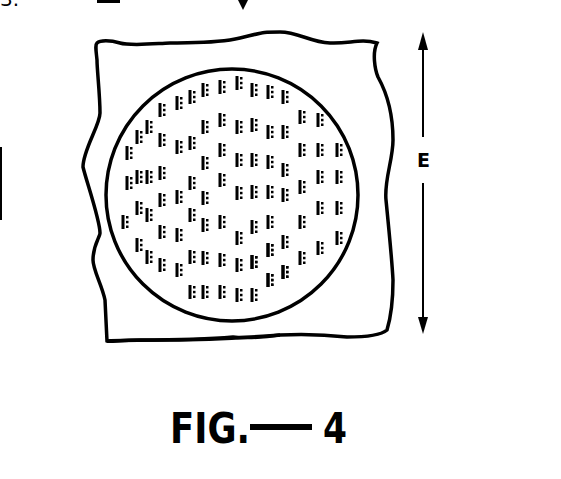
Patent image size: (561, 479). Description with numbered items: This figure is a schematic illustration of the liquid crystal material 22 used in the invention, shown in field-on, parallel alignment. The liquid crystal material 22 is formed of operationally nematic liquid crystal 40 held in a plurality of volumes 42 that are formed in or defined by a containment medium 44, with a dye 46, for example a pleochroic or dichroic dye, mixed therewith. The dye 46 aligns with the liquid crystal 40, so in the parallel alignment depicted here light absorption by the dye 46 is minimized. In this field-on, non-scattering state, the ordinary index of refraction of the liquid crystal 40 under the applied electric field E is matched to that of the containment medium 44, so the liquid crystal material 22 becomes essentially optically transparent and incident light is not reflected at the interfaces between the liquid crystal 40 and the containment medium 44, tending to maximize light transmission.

The liquid crystal material 22 is at (88, 65).
The liquid crystal 40 is at (188, 100).
The volumes 42 is at (305, 90).
The containment medium 44 is at (160, 332).
The dye 46 is at (273, 275).